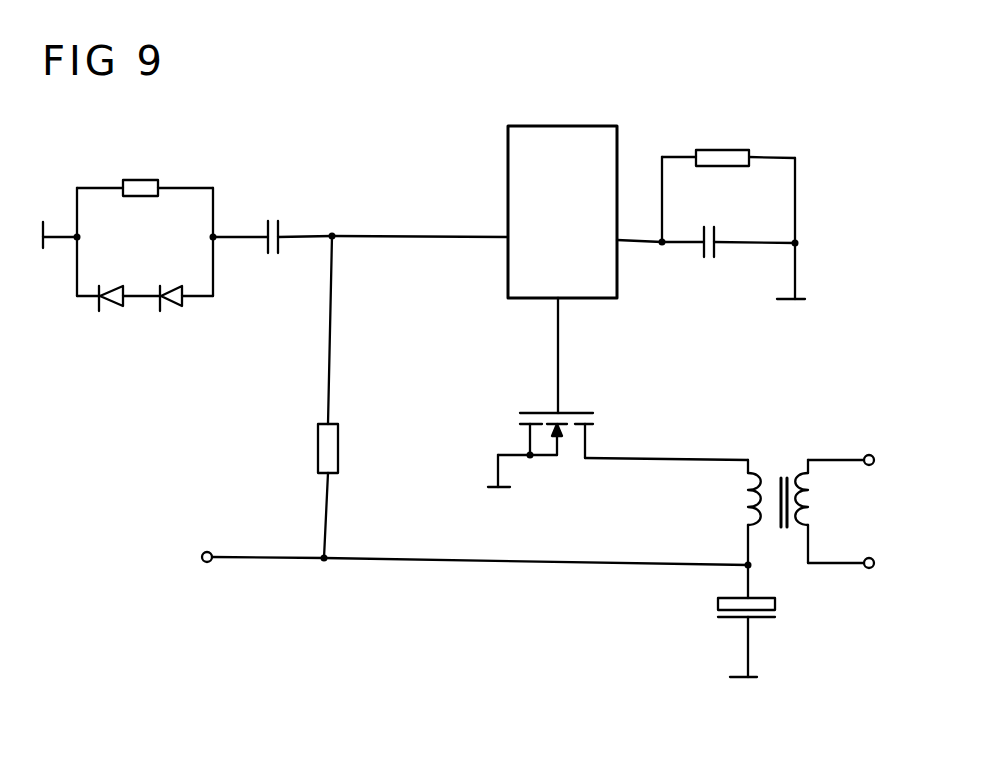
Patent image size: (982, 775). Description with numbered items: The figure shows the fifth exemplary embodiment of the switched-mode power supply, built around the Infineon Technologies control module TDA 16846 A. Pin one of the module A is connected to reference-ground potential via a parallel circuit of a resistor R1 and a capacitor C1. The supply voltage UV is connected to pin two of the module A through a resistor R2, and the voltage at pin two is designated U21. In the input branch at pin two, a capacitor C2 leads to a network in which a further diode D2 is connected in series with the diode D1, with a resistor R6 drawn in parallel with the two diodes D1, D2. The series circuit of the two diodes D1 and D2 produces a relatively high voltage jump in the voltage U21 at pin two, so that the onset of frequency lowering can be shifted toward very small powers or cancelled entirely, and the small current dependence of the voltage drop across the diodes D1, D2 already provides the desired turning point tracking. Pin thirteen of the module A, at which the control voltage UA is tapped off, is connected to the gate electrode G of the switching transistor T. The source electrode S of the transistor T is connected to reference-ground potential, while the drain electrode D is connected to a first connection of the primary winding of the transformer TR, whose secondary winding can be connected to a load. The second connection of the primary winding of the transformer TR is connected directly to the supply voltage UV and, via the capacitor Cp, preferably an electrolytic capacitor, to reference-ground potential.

The resistor R6 is at (145, 219).
The diode D1 is at (118, 320).
The further diode D2 is at (185, 320).
The capacitor C2 is at (274, 217).
The voltage at pin 2 U21 is at (475, 198).
The control module TDA 16846 A is at (562, 194).
The resistor R1 is at (728, 177).
The capacitor C1 is at (711, 260).
The control voltage UA is at (583, 355).
The gate electrode G is at (556, 391).
The switching transistor T is at (618, 433).
The source electrode S is at (522, 460).
The drain electrode D is at (666, 460).
The transformer TR is at (811, 491).
The capacitor Cp is at (773, 621).
The resistor R2 is at (307, 397).
The supply voltage UV is at (470, 541).